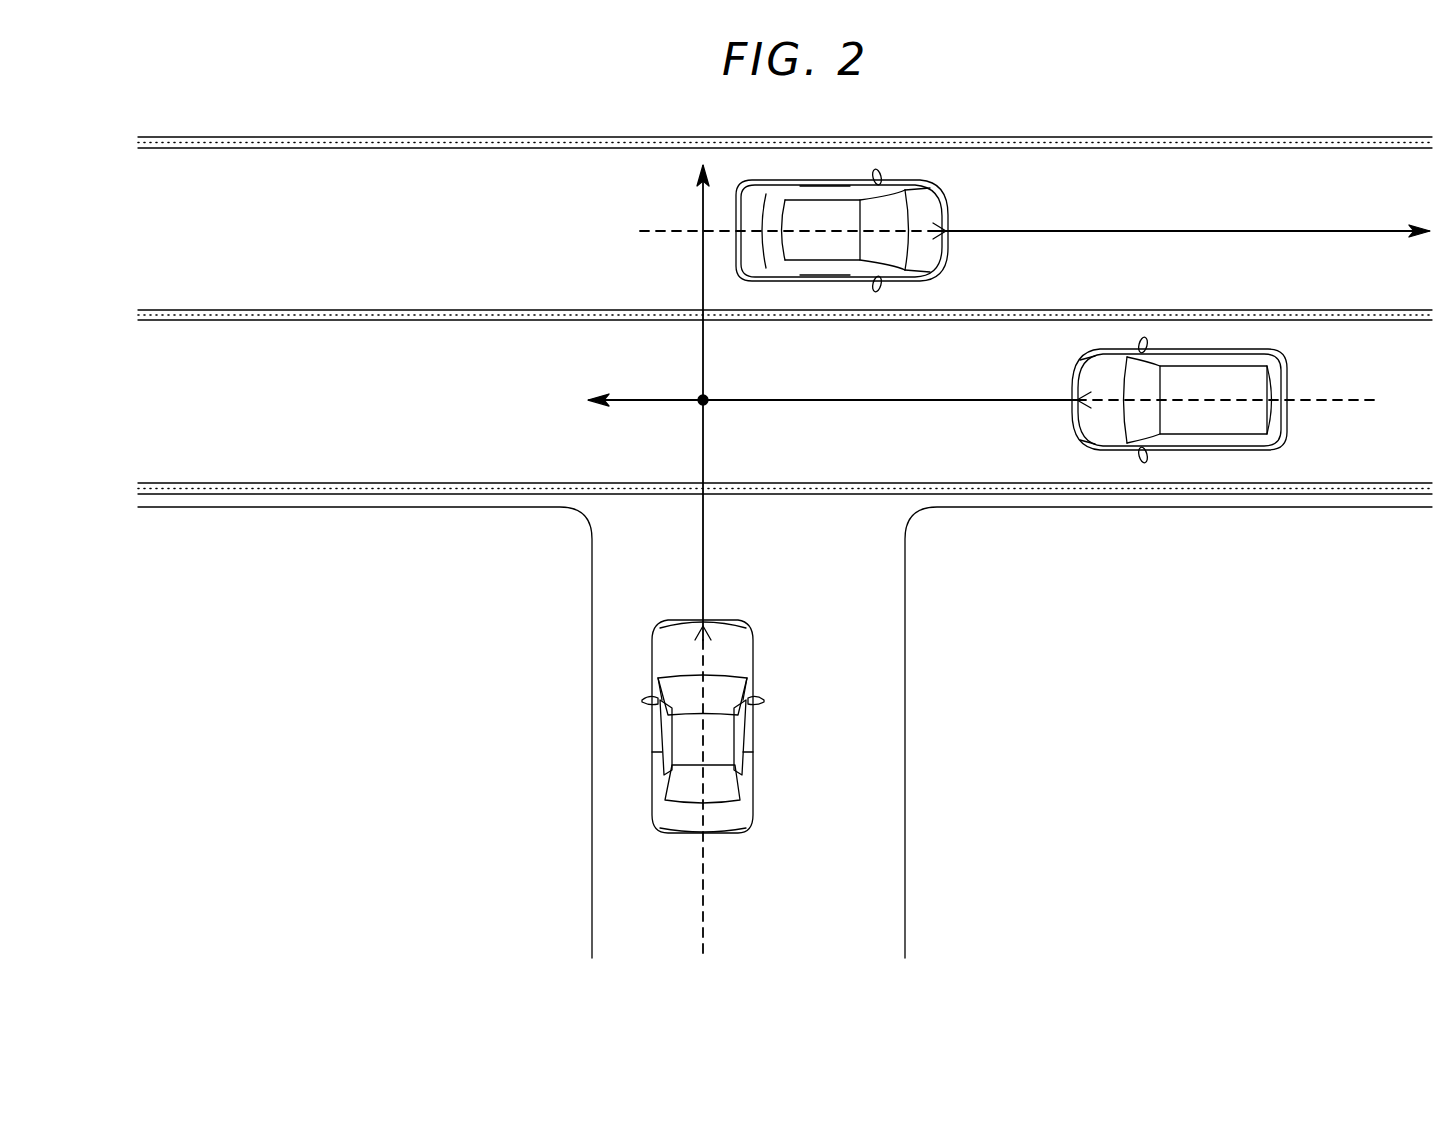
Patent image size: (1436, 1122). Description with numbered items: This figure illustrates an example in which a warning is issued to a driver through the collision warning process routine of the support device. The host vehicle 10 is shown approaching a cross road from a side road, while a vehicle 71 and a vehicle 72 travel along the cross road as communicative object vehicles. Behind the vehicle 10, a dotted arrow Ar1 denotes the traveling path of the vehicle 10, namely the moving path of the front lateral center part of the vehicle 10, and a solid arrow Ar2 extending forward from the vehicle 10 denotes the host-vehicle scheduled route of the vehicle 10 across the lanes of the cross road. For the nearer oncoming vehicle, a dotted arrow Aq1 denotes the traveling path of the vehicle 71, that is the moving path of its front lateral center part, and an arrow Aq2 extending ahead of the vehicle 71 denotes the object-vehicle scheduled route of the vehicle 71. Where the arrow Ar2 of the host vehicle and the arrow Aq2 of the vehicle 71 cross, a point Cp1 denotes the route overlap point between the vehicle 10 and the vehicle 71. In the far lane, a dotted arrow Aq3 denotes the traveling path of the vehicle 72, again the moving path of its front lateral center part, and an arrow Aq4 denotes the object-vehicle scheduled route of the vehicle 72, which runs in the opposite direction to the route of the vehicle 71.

The vehicle 10 is at (672, 834).
The vehicle 71 is at (1082, 447).
The vehicle 72 is at (948, 262).
The dotted arrow Aq1 is at (1303, 399).
The arrow Aq2 is at (805, 399).
The dotted arrow Aq3 is at (660, 235).
The arrow Aq4 is at (1121, 230).
The dotted arrow Ar1 is at (705, 905).
The arrow Ar2 is at (706, 530).
The point Cp1 is at (708, 405).